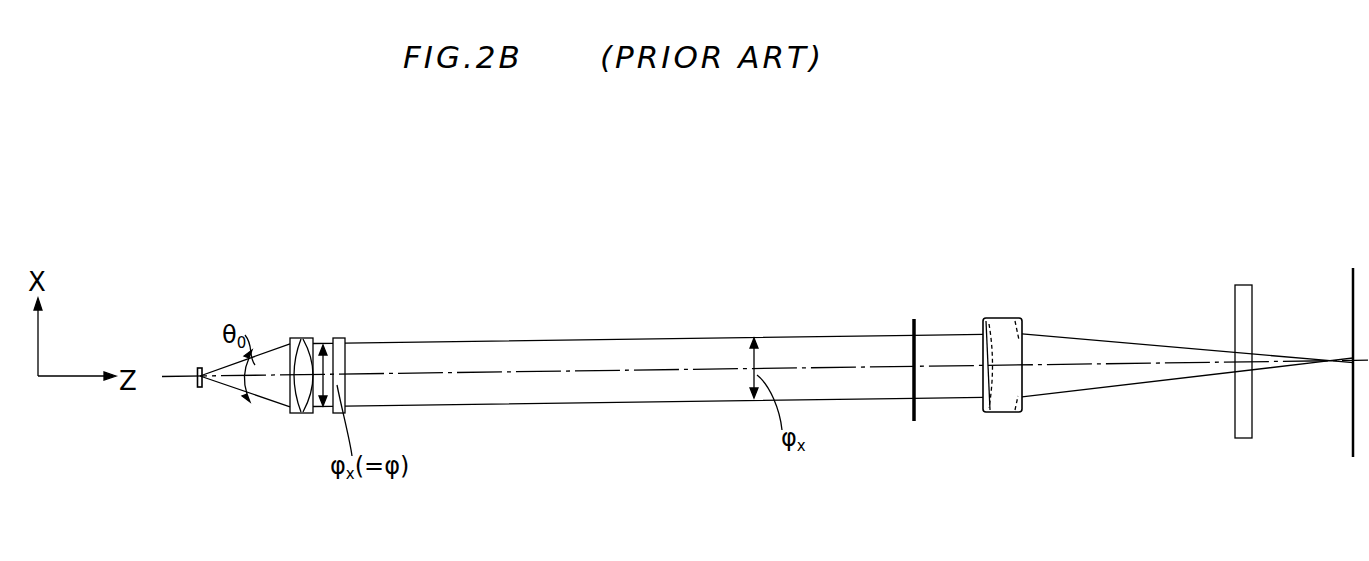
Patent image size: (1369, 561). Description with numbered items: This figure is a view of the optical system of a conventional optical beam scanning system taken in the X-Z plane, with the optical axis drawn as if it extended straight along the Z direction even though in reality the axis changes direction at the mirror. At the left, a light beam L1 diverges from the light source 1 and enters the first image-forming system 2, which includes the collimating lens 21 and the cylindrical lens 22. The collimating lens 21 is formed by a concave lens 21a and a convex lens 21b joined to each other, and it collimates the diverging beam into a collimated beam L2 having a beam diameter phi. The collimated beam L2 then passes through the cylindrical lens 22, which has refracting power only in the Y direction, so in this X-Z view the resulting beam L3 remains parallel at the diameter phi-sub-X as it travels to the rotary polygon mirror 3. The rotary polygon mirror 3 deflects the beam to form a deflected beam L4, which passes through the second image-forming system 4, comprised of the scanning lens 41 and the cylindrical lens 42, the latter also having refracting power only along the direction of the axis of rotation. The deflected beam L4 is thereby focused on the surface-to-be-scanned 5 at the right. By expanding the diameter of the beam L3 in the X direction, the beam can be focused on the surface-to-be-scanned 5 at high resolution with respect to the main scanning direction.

The light source 1 is at (199, 370).
The first image-forming system 2 is at (387, 236).
The collimating lens 21 is at (285, 323).
The concave lens 21a is at (297, 340).
The convex lens 21b is at (318, 346).
The cylindrical lens 22 is at (340, 338).
The rotary polygon mirror 3 is at (900, 334).
The second image-forming system 4 is at (1248, 234).
The scanning lens 41 is at (1007, 318).
The cylindrical lens 42 is at (1243, 285).
The surface-to-be-scanned 5 is at (1352, 280).
The light beam L1 is at (260, 393).
The collimated beam L2 is at (312, 408).
The converging beam L3 is at (488, 406).
The deflected beam L4 is at (957, 398).